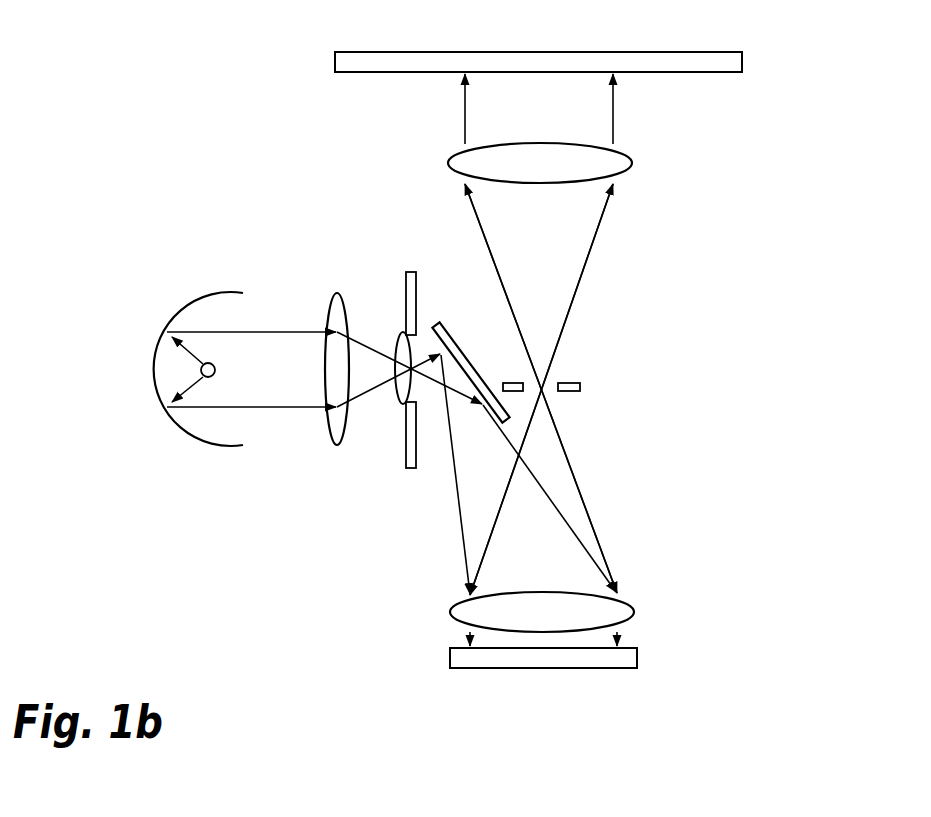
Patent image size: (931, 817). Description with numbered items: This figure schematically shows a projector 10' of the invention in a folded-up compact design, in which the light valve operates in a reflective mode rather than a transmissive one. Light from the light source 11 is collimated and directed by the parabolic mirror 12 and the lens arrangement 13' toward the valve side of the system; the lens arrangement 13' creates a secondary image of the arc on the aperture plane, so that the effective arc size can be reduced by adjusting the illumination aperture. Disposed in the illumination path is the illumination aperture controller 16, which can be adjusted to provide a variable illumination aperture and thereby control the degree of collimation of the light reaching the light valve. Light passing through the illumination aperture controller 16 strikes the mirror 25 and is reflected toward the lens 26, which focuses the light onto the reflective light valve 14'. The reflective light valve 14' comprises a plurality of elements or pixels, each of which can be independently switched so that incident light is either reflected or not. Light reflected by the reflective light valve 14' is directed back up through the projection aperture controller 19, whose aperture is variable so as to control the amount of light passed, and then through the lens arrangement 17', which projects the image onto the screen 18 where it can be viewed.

The projector 10' is at (92, 210).
The light source 11 is at (212, 377).
The parabolic mirror 12 is at (188, 437).
The lens arrangement 13' is at (344, 425).
The illumination aperture controller 16 is at (405, 270).
The mirror 25 is at (445, 333).
The projection aperture controller 19 is at (580, 384).
The lens arrangement 17' is at (600, 137).
The screen 18 is at (742, 62).
The lens 26 is at (633, 613).
The reflective light valve 14' is at (604, 641).